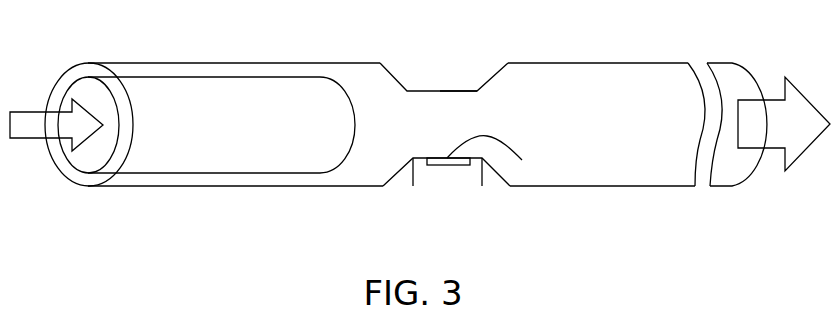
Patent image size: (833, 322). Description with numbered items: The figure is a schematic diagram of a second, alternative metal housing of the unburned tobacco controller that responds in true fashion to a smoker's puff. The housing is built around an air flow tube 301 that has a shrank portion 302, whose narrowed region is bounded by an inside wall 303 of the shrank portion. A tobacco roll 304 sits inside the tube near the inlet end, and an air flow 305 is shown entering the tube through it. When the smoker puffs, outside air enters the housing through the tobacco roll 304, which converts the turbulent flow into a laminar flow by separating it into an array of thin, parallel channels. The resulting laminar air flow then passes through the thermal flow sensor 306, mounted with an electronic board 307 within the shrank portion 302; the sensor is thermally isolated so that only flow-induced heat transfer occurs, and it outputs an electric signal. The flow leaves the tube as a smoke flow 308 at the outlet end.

The air flow tube 301 is at (553, 107).
The shrank portion of the air flow tube 302 is at (442, 127).
The inside wall of the shrank portion 303 is at (457, 92).
The tobacco roll 304 is at (212, 125).
The inlet airflow arrow 305 is at (34, 128).
The thermal flow sensor 306 is at (522, 160).
The electronic board 307 is at (447, 175).
The smoke flow 308 is at (750, 127).